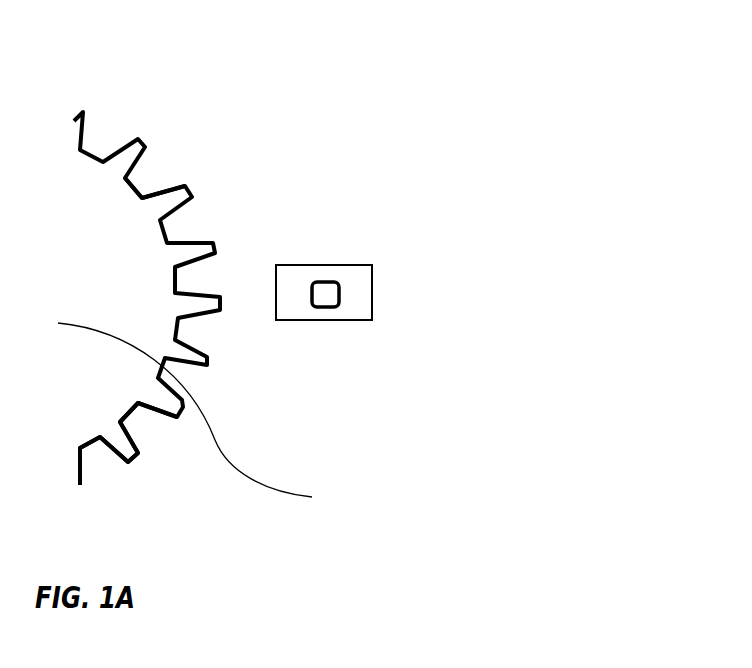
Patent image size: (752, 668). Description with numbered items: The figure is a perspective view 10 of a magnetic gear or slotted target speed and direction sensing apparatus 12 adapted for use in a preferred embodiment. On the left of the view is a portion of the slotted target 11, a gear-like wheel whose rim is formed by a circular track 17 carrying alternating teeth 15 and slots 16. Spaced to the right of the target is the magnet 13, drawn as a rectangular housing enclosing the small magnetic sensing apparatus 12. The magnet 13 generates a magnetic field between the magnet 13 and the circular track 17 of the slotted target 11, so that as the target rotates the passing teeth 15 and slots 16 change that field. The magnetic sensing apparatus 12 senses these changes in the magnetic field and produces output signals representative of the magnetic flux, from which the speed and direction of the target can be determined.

The perspective view 10 is at (508, 65).
The slotted target 11 is at (205, 413).
The magnetic sensing apparatus 12 is at (320, 293).
The magnet 13 is at (360, 273).
The teeth 15 is at (142, 138).
The slots 16 is at (140, 187).
The circular track 17 is at (133, 485).